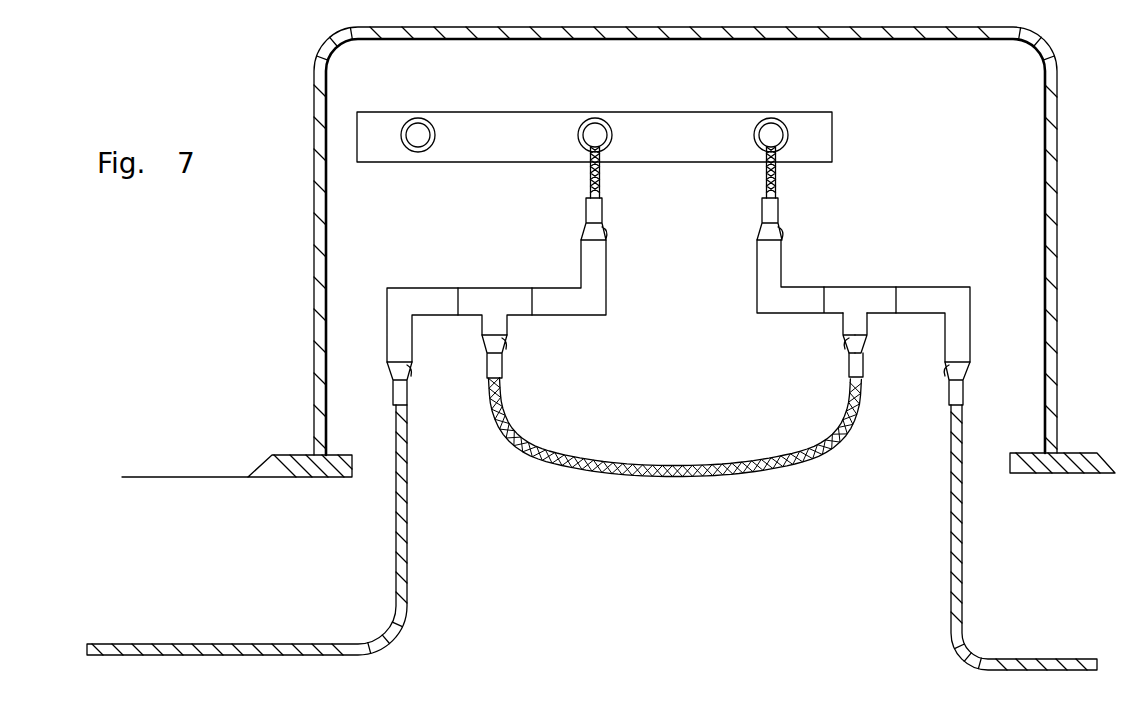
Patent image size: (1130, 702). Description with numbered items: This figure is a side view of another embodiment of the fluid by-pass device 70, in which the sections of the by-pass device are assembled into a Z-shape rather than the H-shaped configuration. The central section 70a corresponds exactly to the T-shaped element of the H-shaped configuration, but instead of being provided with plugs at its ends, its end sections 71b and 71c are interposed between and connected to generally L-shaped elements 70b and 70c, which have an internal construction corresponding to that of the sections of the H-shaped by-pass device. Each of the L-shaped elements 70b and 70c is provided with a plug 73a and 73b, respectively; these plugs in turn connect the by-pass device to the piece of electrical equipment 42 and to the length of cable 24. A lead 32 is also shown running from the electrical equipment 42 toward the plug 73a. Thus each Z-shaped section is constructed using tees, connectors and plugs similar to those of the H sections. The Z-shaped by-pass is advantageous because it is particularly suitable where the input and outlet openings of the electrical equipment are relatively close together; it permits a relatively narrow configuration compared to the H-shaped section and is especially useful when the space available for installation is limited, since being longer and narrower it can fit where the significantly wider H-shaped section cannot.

The piece of electrical equipment 42 is at (750, 112).
The lead wire 32 is at (778, 178).
The plug 73a is at (759, 212).
The fluid by-pass device 70 is at (857, 308).
The section 70a is at (866, 292).
The L-shaped element 70b is at (770, 315).
The L-shaped element 70c is at (972, 322).
The section 71b is at (843, 315).
The section 71c is at (880, 314).
The plug 73b is at (963, 375).
The length of cable 24 is at (963, 556).